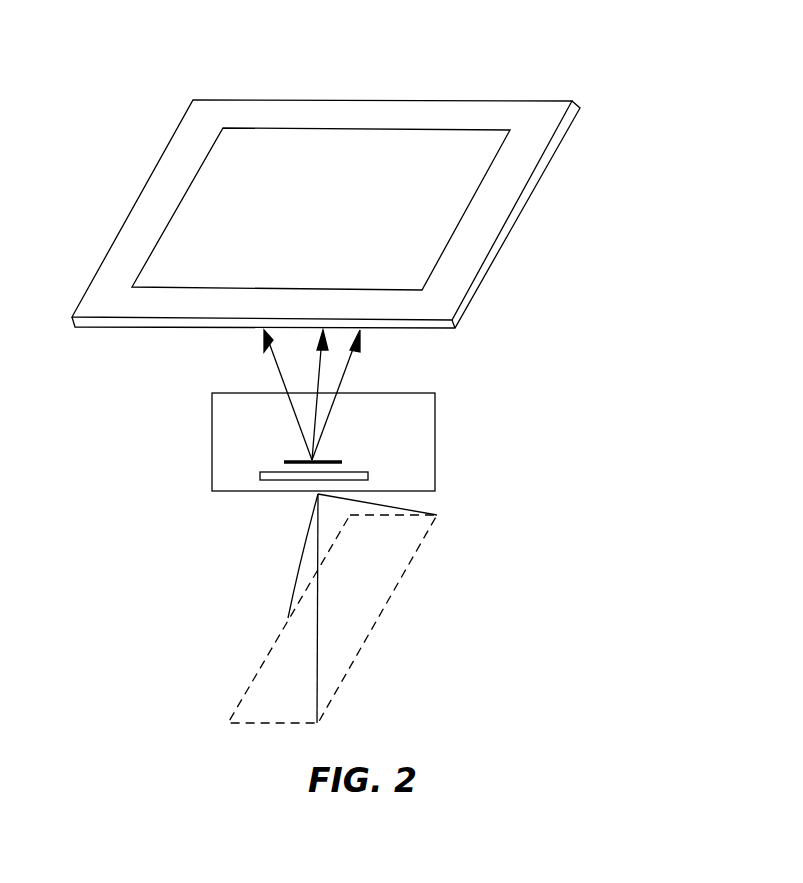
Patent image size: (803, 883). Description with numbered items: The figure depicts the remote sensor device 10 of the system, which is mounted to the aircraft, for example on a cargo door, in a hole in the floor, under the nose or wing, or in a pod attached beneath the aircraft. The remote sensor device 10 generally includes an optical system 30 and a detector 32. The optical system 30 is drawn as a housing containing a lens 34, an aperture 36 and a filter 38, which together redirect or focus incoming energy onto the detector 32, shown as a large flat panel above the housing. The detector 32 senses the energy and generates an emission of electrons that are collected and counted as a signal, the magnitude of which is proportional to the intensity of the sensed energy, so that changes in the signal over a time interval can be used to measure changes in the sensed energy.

The remote sensor device 10 is at (157, 58).
The detector 32 is at (510, 232).
The optical system 30 is at (212, 448).
The filter 38 is at (330, 458).
The aperture 36 is at (340, 467).
The lens 34 is at (368, 476).